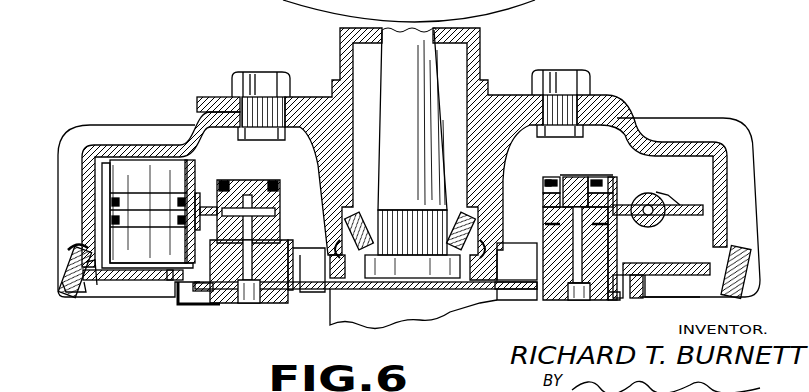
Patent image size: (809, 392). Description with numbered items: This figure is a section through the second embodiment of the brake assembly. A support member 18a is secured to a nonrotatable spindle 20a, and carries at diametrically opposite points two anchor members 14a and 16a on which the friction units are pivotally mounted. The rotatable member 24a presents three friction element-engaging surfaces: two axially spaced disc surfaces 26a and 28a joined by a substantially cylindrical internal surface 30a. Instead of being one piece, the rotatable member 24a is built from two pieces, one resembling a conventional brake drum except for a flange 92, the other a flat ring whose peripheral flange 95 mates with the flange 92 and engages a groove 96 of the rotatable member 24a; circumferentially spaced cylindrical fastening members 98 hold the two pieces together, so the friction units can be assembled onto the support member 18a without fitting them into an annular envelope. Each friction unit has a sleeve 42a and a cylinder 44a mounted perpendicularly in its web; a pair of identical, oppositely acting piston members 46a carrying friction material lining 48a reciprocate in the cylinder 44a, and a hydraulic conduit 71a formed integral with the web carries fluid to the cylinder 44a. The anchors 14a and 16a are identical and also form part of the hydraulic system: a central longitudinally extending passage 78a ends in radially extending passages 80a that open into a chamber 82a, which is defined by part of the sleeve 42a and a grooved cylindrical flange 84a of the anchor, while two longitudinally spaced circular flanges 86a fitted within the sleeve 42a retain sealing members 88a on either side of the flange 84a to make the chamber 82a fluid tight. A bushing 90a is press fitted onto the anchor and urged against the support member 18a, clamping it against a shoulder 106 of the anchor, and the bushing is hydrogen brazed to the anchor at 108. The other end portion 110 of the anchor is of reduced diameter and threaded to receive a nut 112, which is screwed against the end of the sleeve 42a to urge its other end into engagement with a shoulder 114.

The anchor member 14a is at (232, 300).
The anchor member 16a is at (607, 292).
The support member 18a is at (320, 292).
The spindle 20a is at (420, 75).
The rotatable member 24a is at (115, 135).
The disc surface 26a is at (165, 262).
The disc surface 28a is at (150, 160).
The cylindrical internal surface 30a is at (703, 194).
The sleeve 42a is at (268, 215).
The cylinder 44a is at (105, 163).
The piston member 46a is at (135, 186).
The friction material lining 48a is at (163, 168).
The hydraulic conduit 71a is at (668, 205).
The longitudinally extending passage 78a is at (577, 285).
The radially extending passage 80a is at (565, 180).
The chamber 82a is at (595, 178).
The cylindrical flange 84a is at (550, 172).
The circular flange 86a is at (548, 226).
The sealing member 88a is at (650, 203).
The bushing 90a is at (622, 258).
The flange 92 is at (62, 280).
The peripheral flange 95 is at (100, 285).
The groove 96 is at (85, 245).
The cylindrical fastening member 98 is at (80, 300).
The shoulder 106 is at (545, 290).
The brazed joint 108 is at (517, 261).
The end portion of the anchor 110 is at (588, 176).
The nut 112 is at (545, 183).
The shoulder 114 is at (620, 237).